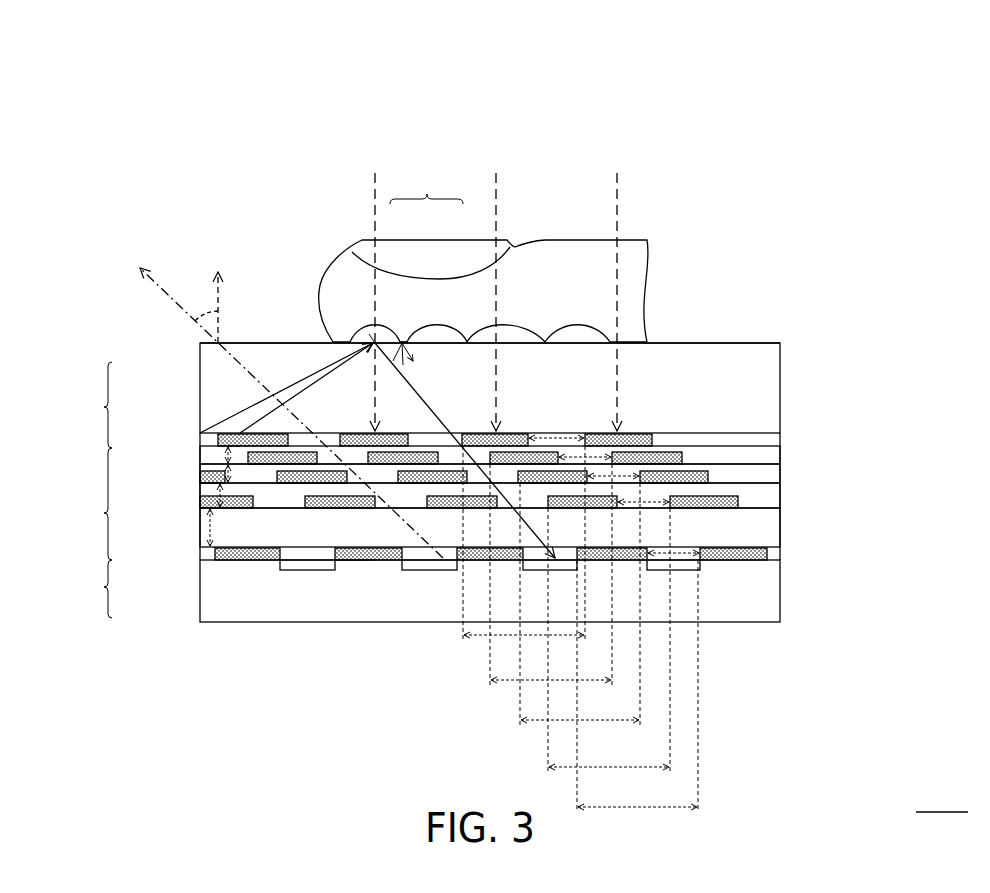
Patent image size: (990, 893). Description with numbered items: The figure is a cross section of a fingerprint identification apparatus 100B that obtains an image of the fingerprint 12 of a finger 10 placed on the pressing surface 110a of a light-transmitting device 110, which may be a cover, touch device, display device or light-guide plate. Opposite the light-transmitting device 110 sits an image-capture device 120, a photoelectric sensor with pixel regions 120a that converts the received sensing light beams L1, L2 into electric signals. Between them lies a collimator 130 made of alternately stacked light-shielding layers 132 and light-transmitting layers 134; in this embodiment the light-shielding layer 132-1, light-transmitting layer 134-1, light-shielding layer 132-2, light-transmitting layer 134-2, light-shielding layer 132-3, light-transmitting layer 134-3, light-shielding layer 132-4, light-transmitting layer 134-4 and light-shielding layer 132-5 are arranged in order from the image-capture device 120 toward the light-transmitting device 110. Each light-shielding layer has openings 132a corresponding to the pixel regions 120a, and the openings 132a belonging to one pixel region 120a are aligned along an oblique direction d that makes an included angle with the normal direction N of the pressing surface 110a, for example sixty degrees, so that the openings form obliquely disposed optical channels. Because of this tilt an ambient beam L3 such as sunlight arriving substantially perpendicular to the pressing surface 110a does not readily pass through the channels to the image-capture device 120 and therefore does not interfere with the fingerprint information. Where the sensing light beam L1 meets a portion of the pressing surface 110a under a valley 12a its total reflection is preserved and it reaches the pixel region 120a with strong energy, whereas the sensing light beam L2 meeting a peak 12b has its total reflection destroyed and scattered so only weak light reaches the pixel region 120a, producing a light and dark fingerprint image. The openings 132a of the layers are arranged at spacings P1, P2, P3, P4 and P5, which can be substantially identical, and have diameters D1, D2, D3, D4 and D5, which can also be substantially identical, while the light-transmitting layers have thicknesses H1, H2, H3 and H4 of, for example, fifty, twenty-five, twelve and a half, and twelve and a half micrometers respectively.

The fingerprint identification apparatus 100B is at (942, 796).
The finger 10 is at (587, 253).
The fingerprint 12 is at (490, 258).
The valley 12a is at (377, 332).
The peak 12b is at (432, 346).
The light-transmitting device 110 is at (425, 395).
The pressing surface 110a is at (763, 341).
The collimator 130 is at (425, 496).
The light-shielding layers 132 is at (552, 463).
The light-shielding layer 132-1 is at (752, 562).
The light-shielding layer 132-2 is at (738, 508).
The light-shielding layer 132-3 is at (703, 479).
The light-shielding layer 132-4 is at (683, 458).
The light-shielding layer 132-5 is at (655, 439).
The openings 132a is at (237, 447).
The light-transmitting layers 134 is at (552, 478).
The light-transmitting layer 134-1 is at (760, 539).
The light-transmitting layer 134-2 is at (758, 500).
The light-transmitting layer 134-3 is at (767, 471).
The light-transmitting layer 134-4 is at (733, 454).
The image-capture device 120 is at (425, 591).
The pixel region 120a is at (420, 571).
The sensing light beam L1 is at (203, 430).
The sensing light beam L2 is at (316, 383).
The ambient beam L3 is at (372, 183).
The normal direction N is at (222, 297).
The oblique direction d is at (168, 296).
The thickness H1 is at (207, 528).
The thickness H2 is at (216, 496).
The thickness H3 is at (225, 474).
The thickness H4 is at (225, 455).
The diameter D1 is at (673, 538).
The diameter D2 is at (647, 497).
The diameter D3 is at (602, 471).
The diameter D4 is at (572, 453).
The diameter D5 is at (540, 434).
The spacing P1 is at (637, 697).
The spacing P2 is at (609, 651).
The spacing P3 is at (580, 616).
The spacing P4 is at (551, 585).
The spacing P5 is at (524, 555).